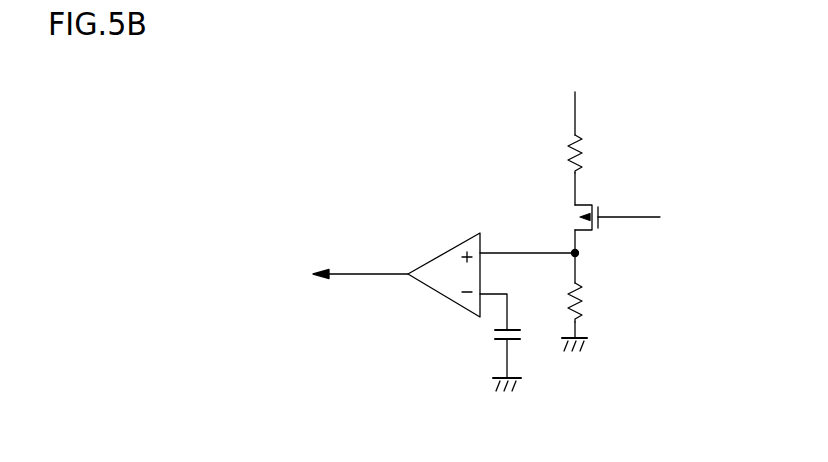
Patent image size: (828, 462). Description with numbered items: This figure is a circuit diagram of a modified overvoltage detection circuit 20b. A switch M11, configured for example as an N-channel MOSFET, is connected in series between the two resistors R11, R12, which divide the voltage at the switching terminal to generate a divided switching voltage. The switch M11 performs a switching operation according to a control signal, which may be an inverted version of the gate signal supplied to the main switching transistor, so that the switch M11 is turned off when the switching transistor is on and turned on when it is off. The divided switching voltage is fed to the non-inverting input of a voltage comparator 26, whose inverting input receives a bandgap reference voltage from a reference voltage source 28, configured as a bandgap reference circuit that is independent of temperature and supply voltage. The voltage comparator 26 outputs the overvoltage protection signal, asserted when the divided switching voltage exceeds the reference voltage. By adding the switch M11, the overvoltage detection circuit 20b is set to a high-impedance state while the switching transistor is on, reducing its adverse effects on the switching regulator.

The overvoltage detection circuit 20b is at (465, 433).
The voltage comparator 26 is at (446, 248).
The reference voltage source 28 is at (493, 334).
The resistor R11 is at (583, 143).
The resistor R12 is at (584, 290).
The switch M11 is at (578, 213).